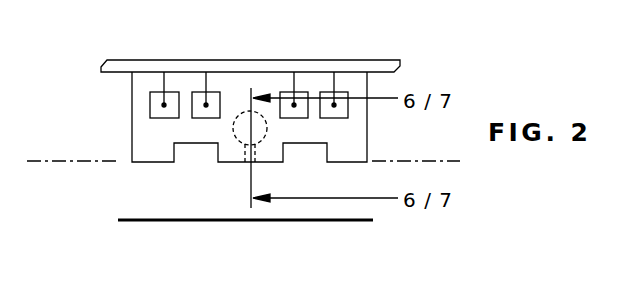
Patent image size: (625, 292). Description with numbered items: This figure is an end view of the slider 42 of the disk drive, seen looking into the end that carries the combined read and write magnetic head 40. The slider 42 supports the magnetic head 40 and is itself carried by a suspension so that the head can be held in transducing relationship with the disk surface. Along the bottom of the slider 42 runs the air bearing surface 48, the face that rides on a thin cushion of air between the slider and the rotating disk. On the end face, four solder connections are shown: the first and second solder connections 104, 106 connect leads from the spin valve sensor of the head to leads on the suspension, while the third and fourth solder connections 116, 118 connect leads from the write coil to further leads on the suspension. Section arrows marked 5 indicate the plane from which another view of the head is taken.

The slider 42 is at (132, 104).
The first solder connection 104 is at (151, 93).
The third solder connection 116 is at (193, 93).
The fourth solder connection 118 is at (281, 93).
The second solder connection 106 is at (321, 93).
The air bearing surface 48 is at (53, 162).
The magnetic head 40 is at (240, 140).
The section line for FIG. 5 is at (138, 224).